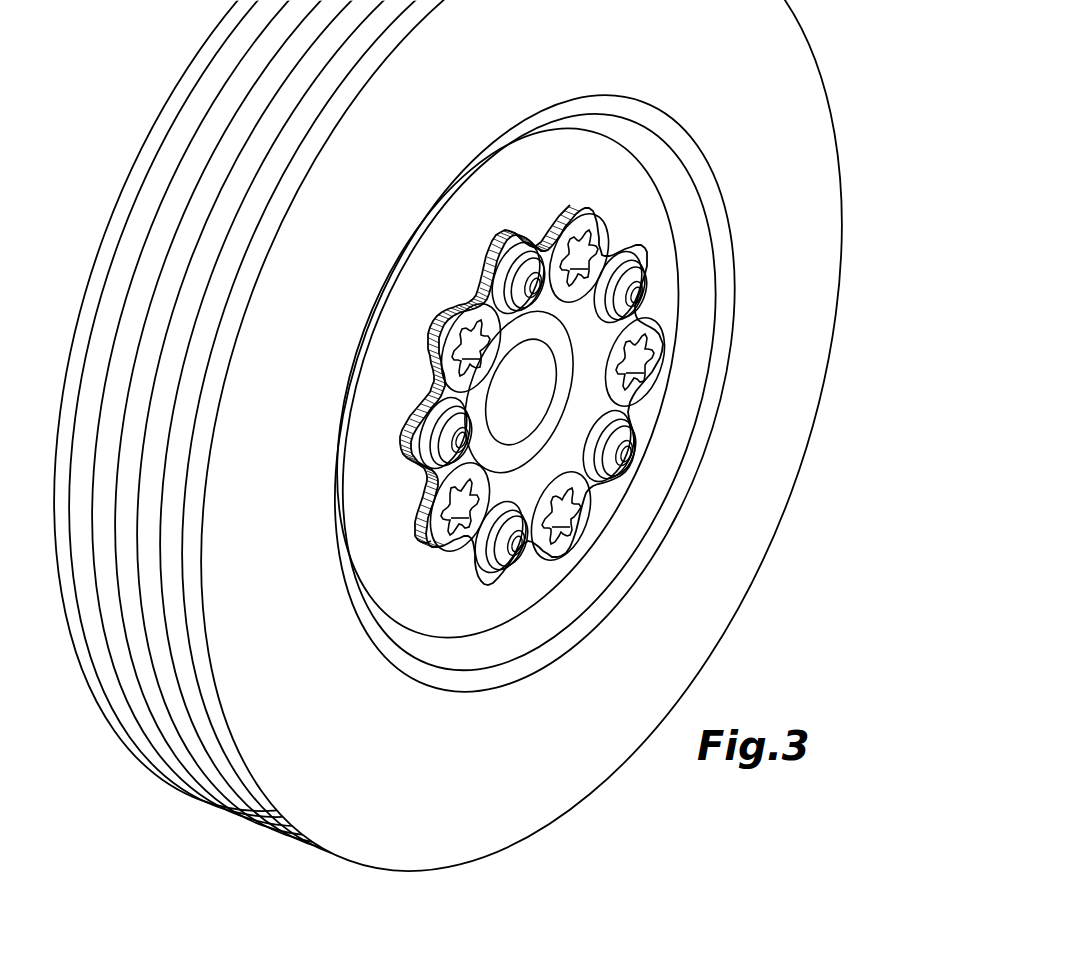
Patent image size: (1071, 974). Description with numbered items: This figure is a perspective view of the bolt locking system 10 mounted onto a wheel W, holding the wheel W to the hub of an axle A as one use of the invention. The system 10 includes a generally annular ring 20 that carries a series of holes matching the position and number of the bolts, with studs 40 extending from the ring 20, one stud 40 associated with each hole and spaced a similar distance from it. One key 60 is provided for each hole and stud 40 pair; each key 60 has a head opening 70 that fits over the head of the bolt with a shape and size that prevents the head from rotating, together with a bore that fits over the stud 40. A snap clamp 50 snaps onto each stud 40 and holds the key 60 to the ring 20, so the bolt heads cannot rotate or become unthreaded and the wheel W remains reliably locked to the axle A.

The bolt locking system 10 is at (523, 382).
The ring 20 is at (417, 470).
The stud 40 is at (541, 236).
The snap clamp 50 is at (592, 478).
The key 60 is at (592, 218).
The head opening 70 is at (418, 523).
The wheel W is at (482, 480).
The axle A is at (518, 391).